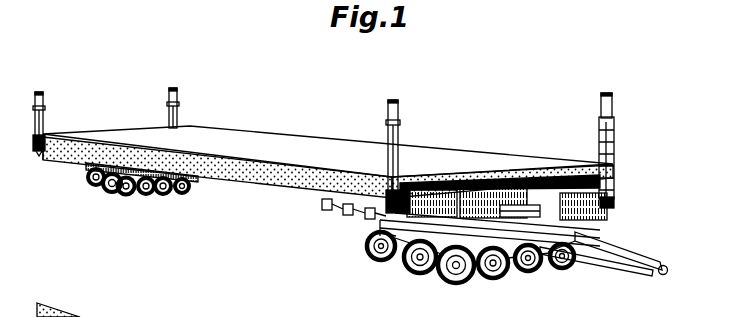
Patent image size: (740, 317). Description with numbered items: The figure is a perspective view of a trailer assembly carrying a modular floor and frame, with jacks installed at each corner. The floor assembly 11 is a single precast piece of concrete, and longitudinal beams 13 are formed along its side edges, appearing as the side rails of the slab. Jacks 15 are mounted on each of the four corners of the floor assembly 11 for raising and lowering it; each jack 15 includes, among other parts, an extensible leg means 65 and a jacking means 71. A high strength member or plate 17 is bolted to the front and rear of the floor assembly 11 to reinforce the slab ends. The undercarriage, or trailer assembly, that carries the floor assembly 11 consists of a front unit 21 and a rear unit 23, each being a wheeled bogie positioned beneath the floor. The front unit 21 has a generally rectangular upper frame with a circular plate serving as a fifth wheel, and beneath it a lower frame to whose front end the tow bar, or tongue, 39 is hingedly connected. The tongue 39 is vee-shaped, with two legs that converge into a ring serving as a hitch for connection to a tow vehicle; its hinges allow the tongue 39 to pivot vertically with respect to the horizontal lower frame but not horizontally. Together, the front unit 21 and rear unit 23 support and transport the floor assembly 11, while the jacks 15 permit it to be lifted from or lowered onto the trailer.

The floor assembly 11 is at (318, 157).
The longitudinal beams 13 is at (312, 186).
The jacks 15 is at (615, 118).
The high strength member or plate 17 is at (432, 205).
The front unit 21 is at (405, 282).
The rear unit 23 is at (102, 200).
The tow bar or tongue 39 is at (608, 262).
The leg means 65 is at (374, 254).
The jacking means 71 is at (358, 216).